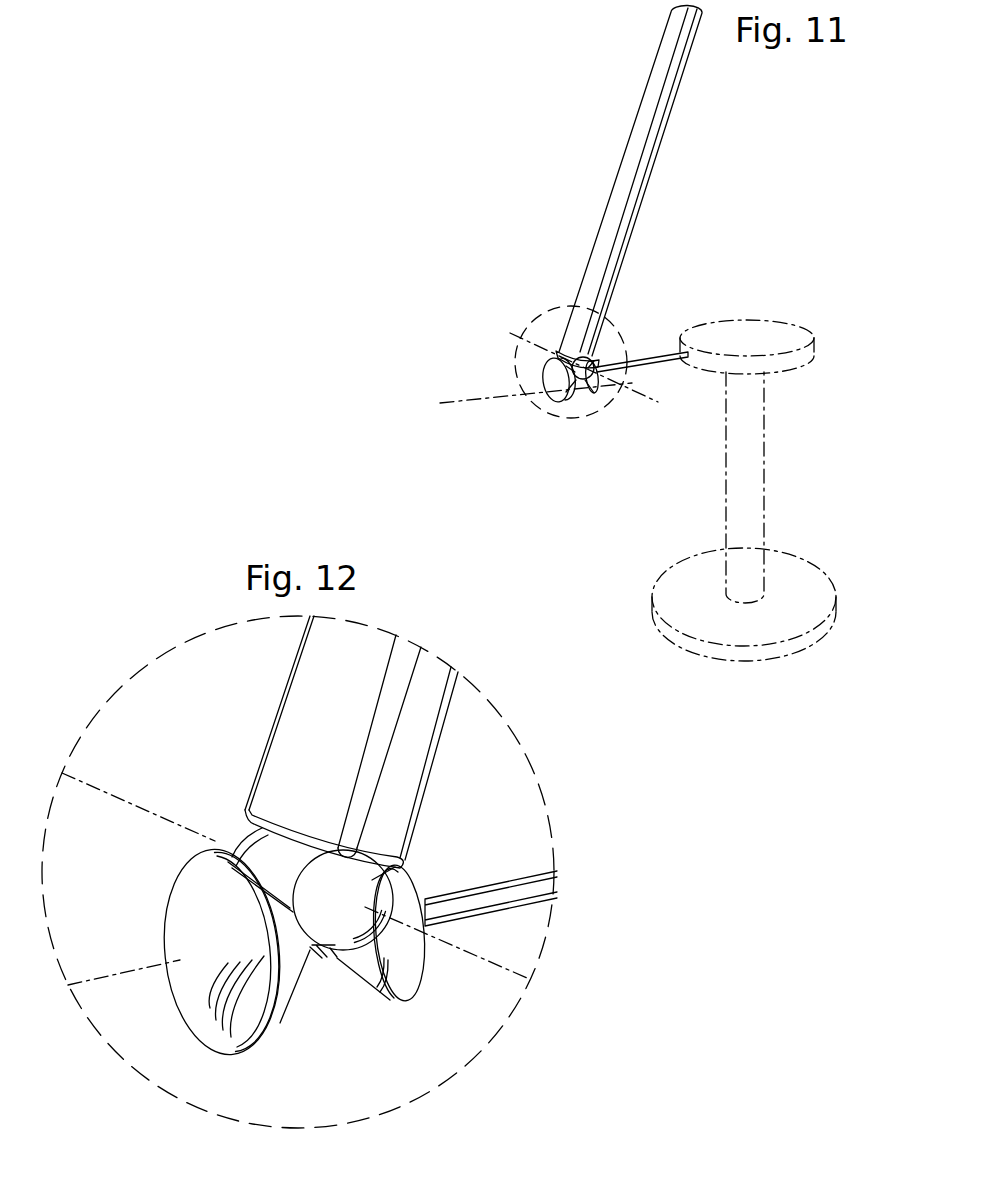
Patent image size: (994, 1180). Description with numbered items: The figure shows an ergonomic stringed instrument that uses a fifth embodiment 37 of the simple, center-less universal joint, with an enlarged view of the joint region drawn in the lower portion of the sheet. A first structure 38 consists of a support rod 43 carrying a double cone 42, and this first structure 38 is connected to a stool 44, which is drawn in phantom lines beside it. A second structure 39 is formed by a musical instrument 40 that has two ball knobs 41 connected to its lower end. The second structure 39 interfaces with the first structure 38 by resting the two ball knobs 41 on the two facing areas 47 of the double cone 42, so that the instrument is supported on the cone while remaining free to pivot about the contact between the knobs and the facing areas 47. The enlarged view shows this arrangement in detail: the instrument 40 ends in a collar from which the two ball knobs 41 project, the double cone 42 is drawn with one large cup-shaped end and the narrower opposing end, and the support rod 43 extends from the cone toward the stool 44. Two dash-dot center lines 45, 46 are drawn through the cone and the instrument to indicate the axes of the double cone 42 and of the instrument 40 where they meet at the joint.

In FIG. 11, the fifth embodiment 37 is at (347, 179).
In FIG. 11, the first structure 38 is at (571, 429).
In FIG. 11, the second structure 39 is at (553, 158).
In FIG. 11, the musical instrument 40 is at (601, 262).
In FIG. 12, the musical instrument 40 is at (351, 742).
In FIG. 12, the ball knobs 41 is at (328, 878).
In FIG. 11, the double cone 42 is at (554, 421).
In FIG. 12, the double cone 42 is at (196, 945).
In FIG. 11, the support rod 43 is at (655, 362).
In FIG. 12, the support rod 43 is at (500, 895).
In FIG. 11, the stool 44 is at (745, 248).
In FIG. 11, the cup axis 45 is at (475, 397).
In FIG. 12, the cup axis 45 is at (97, 978).
In FIG. 11, the shaft axis 46 is at (648, 400).
In FIG. 12, the shaft axis 46 is at (107, 793).
In FIG. 12, the facing areas 47 is at (383, 963).